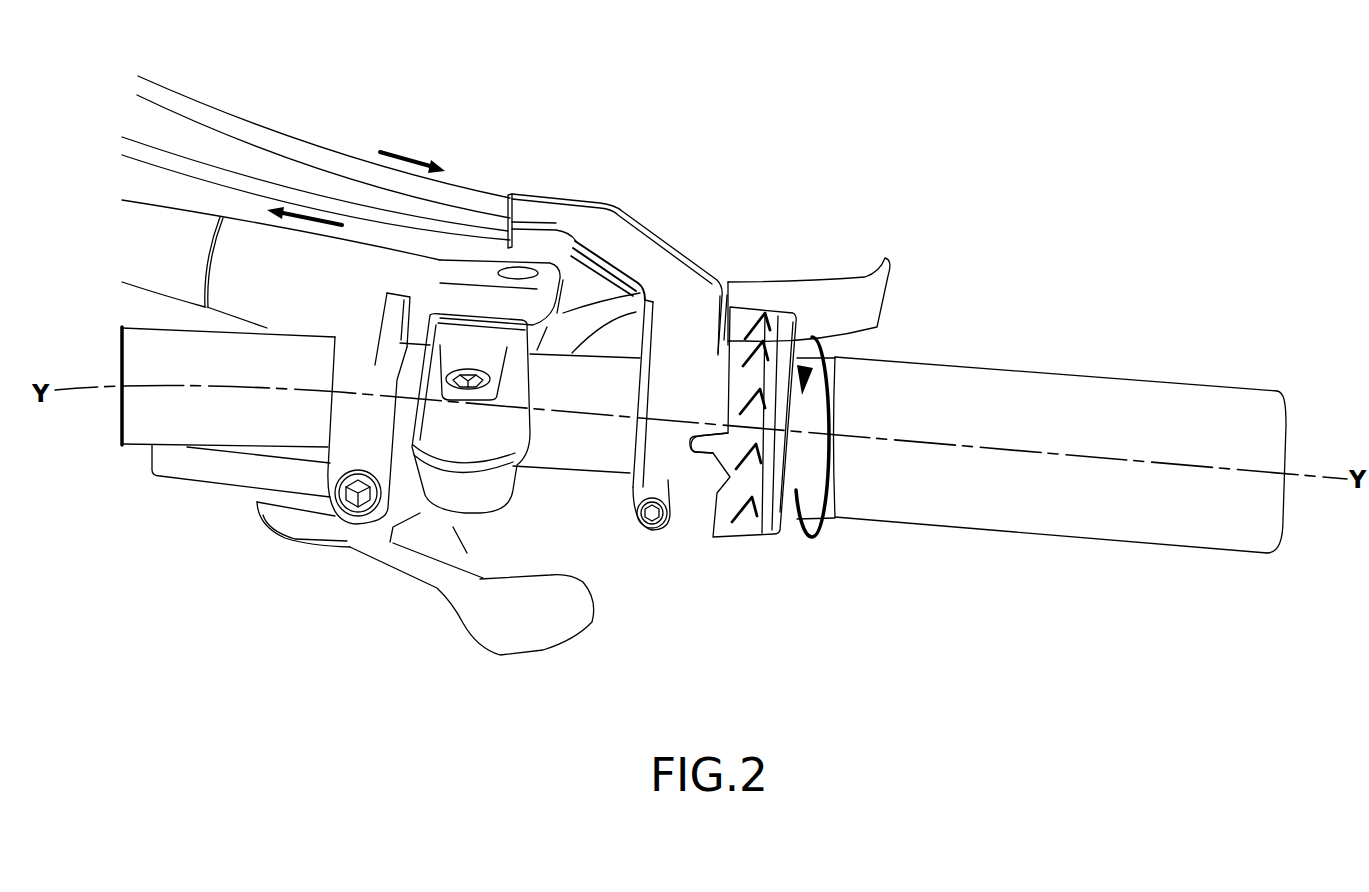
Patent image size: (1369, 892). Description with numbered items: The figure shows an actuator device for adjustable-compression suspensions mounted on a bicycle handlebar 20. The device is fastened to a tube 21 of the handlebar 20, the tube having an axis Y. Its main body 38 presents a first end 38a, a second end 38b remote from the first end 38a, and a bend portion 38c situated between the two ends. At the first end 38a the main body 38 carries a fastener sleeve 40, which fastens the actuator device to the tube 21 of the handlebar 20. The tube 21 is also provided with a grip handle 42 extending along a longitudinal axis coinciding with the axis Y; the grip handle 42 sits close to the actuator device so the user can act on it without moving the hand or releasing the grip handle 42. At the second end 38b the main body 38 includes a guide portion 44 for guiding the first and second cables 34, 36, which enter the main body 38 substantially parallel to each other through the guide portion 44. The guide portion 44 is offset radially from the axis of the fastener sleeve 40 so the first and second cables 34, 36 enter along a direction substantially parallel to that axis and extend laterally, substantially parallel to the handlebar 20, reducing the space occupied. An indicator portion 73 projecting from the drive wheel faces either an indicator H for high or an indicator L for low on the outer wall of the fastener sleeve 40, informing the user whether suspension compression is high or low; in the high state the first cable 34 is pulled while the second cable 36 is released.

The handlebar 20 is at (142, 427).
The tube 21 is at (557, 453).
The first cable 34 is at (353, 168).
The second cable 36 is at (262, 185).
The main body 38 is at (686, 371).
The first end 38a is at (705, 508).
The second end 38b is at (515, 195).
The bend portion 38c is at (700, 257).
The fastener sleeve 40 is at (672, 530).
The grip handle 42 is at (1038, 388).
The guide portion 44 is at (523, 238).
The indicator portion 73 is at (690, 448).